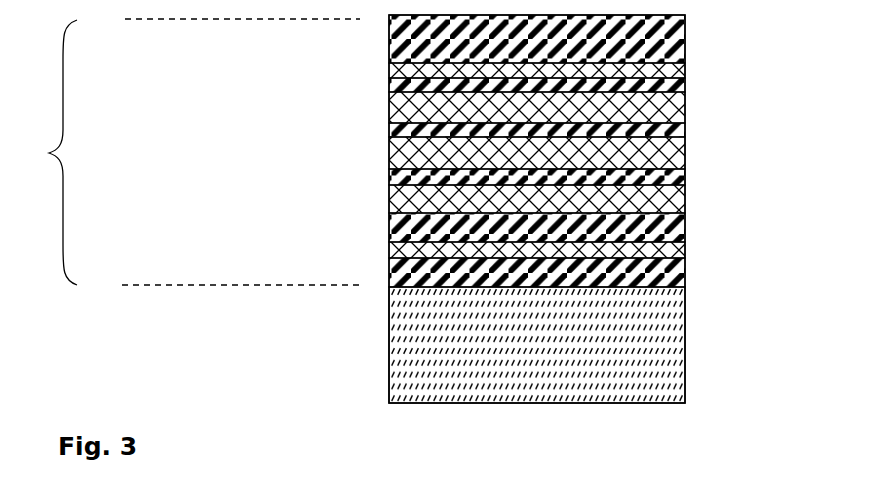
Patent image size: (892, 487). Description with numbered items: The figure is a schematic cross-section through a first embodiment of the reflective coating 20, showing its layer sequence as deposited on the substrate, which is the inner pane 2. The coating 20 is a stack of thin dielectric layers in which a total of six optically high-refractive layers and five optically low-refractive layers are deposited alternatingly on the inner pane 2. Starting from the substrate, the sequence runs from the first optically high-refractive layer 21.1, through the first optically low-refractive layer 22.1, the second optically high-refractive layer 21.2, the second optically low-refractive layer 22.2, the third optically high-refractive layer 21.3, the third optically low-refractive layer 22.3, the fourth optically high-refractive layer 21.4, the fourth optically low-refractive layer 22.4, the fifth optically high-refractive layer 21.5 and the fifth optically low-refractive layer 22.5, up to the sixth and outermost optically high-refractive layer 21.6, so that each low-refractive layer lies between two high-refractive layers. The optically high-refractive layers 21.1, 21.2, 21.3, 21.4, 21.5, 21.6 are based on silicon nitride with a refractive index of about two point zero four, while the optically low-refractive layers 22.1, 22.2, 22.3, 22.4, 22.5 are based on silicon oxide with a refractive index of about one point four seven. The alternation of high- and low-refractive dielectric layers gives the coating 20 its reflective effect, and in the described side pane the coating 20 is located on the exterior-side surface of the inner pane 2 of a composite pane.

The reflective coating 20 is at (184, 152).
The inner pane 2 is at (652, 347).
The optically high-refractive layer 21.1 is at (685, 281).
The optically high-refractive layer 21.2 is at (685, 231).
The optically high-refractive layer 21.3 is at (685, 179).
The optically high-refractive layer 21.4 is at (685, 130).
The optically high-refractive layer 21.5 is at (685, 85).
The optically high-refractive layer 21.6 is at (685, 38).
The optically low-refractive layer 22.1 is at (402, 250).
The optically low-refractive layer 22.2 is at (402, 197).
The optically low-refractive layer 22.3 is at (402, 154).
The optically low-refractive layer 22.4 is at (402, 109).
The optically low-refractive layer 22.5 is at (402, 70).